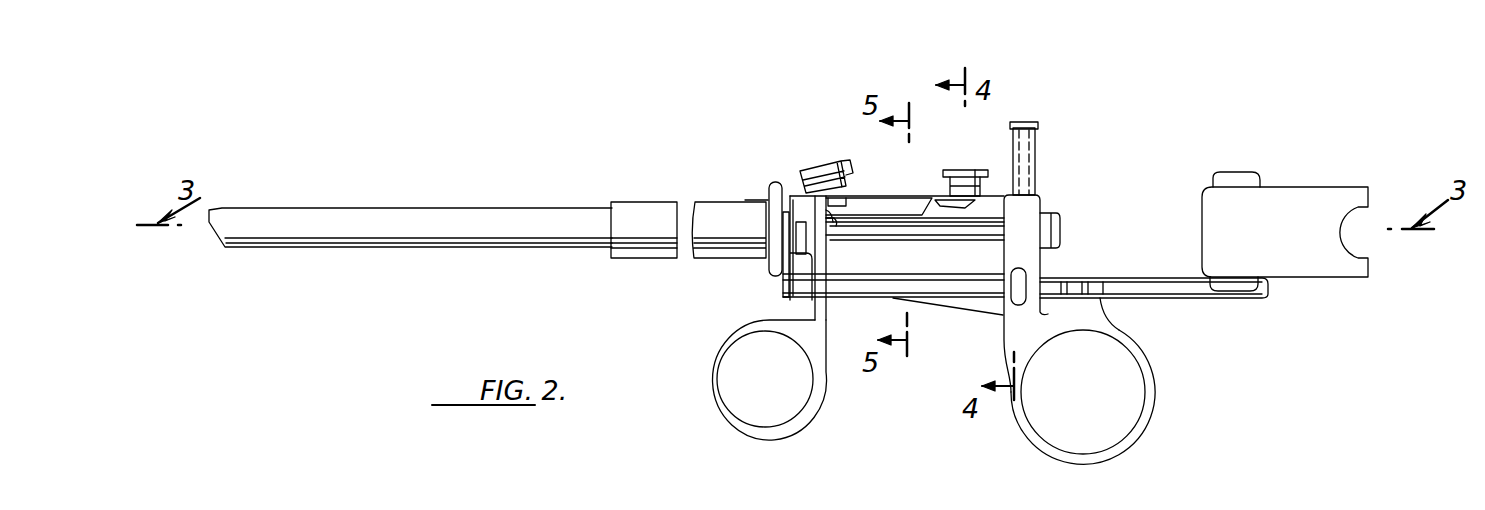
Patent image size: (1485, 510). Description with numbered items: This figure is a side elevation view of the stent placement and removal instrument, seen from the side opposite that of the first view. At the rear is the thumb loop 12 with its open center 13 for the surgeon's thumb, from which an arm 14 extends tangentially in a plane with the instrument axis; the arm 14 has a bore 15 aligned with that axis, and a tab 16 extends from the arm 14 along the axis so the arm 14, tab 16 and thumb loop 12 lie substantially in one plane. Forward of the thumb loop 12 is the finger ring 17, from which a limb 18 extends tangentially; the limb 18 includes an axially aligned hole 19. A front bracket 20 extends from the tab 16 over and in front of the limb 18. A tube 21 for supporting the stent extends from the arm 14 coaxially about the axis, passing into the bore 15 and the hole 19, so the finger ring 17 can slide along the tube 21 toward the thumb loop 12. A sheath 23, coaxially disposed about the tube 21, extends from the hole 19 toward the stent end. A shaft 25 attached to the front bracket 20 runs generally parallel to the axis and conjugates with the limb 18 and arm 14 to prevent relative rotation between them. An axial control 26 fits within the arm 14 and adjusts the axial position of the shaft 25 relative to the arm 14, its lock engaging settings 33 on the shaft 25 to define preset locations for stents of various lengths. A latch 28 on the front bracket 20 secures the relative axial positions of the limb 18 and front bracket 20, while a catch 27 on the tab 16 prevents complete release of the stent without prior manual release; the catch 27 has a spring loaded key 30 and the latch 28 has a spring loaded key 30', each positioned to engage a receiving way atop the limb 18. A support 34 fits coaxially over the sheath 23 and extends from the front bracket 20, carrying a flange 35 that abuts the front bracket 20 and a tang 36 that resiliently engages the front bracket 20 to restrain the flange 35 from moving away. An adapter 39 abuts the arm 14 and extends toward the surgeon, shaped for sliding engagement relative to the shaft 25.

The thumb loop 12 is at (1152, 414).
The open center 13 is at (1078, 448).
The arm 14 is at (1040, 200).
The bore 15 is at (1060, 226).
The tab 16 is at (1010, 195).
The finger ring 17 is at (712, 403).
The limb 18 is at (790, 190).
The hole 19 is at (826, 240).
The front bracket 20 is at (786, 284).
The tube 21 is at (968, 238).
The sheath 23 is at (375, 250).
The shaft 25 is at (930, 290).
The axial control 26 is at (1022, 292).
The catch 27 is at (965, 172).
The latch 28 is at (812, 166).
The spring loaded key 30 is at (883, 192).
The spring loaded key 30' is at (911, 181).
The settings 33 is at (1105, 294).
The support 34 is at (700, 202).
The flange 35 is at (768, 198).
The tang 36 is at (795, 232).
The adapter 39 is at (1332, 280).